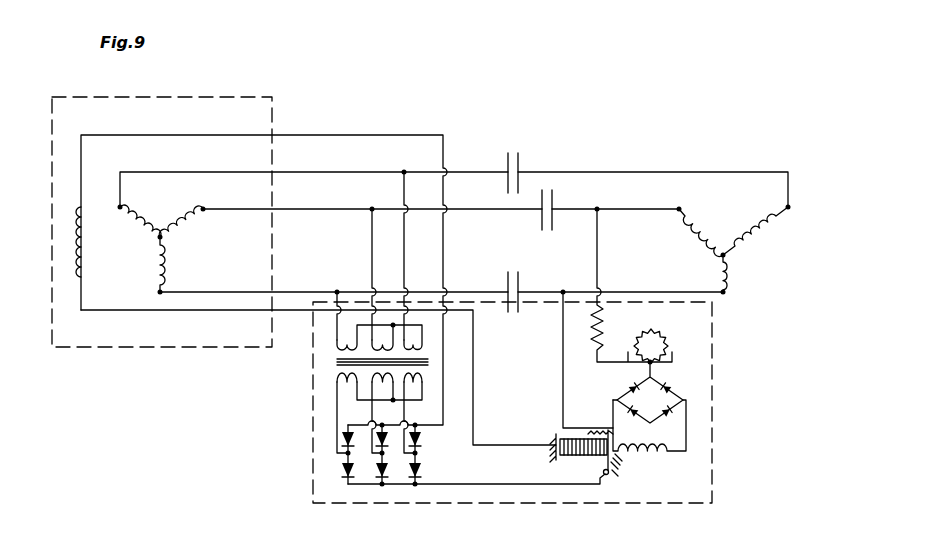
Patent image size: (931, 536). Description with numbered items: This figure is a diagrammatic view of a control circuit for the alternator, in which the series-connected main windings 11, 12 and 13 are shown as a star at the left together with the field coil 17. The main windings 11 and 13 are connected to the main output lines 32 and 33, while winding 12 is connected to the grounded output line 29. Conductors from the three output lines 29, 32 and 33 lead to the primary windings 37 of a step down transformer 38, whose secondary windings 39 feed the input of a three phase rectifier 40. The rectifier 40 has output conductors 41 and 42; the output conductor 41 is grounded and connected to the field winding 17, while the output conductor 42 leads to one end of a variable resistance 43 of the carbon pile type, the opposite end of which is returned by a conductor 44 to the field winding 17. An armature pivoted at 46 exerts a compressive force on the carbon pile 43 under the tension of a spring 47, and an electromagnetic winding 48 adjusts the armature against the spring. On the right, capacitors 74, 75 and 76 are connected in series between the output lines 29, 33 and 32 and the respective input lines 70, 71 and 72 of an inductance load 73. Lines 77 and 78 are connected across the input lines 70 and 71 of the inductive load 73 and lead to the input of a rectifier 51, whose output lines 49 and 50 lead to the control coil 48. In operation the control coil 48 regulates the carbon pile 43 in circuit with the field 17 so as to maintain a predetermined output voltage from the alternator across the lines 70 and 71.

The main winding 11 is at (192, 228).
The main winding 12 is at (171, 268).
The main winding 13 is at (147, 217).
The field coil 17 is at (96, 260).
The grounded output line 29 is at (287, 292).
The main output line 32 is at (313, 211).
The main output line 33 is at (364, 172).
The primary windings 37 is at (337, 340).
The step down transformer 38 is at (330, 362).
The secondary windings 39 is at (337, 385).
The three phase rectifier 40 is at (430, 453).
The output conductor 41 is at (358, 135).
The output conductor 42 is at (468, 483).
The variable resistance 43 is at (590, 456).
The conductor 44 is at (475, 385).
The pivot 46 is at (620, 470).
The spring 47 is at (588, 433).
The electromagnetic winding 48 is at (657, 458).
The output line 49 is at (612, 421).
The output line 50 is at (687, 422).
The rectifier 51 is at (674, 381).
The input line 70 is at (630, 292).
The input line 71 is at (615, 209).
The input line 72 is at (583, 170).
The inductance load 73 is at (738, 259).
The capacitor 74 is at (520, 285).
The capacitor 75 is at (555, 205).
The capacitor 76 is at (519, 165).
The line 77 is at (600, 255).
The line 78 is at (561, 358).